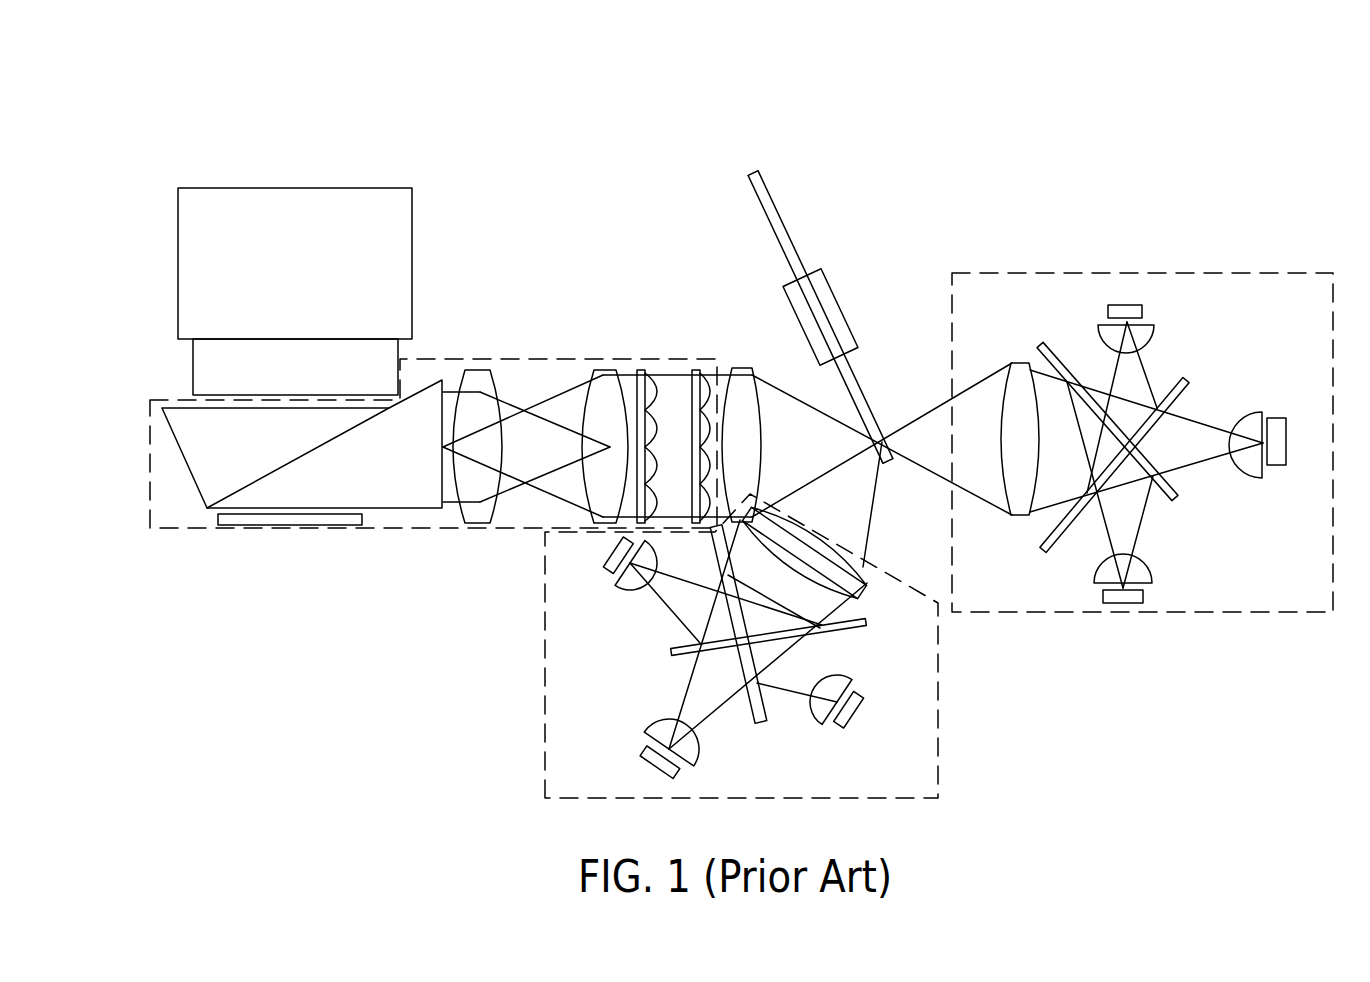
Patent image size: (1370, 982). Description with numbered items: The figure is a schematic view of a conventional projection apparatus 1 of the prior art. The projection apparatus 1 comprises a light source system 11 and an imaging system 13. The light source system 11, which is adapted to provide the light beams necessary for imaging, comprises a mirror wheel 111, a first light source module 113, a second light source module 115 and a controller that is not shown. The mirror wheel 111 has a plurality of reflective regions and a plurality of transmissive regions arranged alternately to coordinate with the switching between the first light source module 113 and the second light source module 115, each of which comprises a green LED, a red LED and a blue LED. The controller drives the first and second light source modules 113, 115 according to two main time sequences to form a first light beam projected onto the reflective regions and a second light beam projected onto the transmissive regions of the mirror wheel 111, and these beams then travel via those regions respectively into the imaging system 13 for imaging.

The projection apparatus 1 is at (727, 100).
The light source system 11 is at (1035, 219).
The imaging system 13 is at (515, 360).
The mirror wheel 111 is at (792, 242).
The first light source module 113 is at (882, 572).
The second light source module 115 is at (1082, 272).